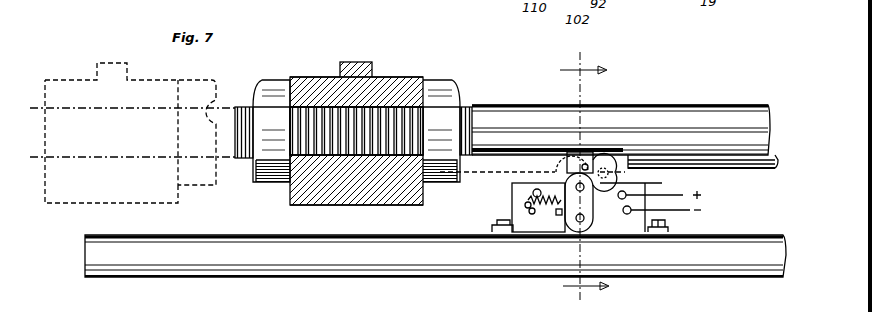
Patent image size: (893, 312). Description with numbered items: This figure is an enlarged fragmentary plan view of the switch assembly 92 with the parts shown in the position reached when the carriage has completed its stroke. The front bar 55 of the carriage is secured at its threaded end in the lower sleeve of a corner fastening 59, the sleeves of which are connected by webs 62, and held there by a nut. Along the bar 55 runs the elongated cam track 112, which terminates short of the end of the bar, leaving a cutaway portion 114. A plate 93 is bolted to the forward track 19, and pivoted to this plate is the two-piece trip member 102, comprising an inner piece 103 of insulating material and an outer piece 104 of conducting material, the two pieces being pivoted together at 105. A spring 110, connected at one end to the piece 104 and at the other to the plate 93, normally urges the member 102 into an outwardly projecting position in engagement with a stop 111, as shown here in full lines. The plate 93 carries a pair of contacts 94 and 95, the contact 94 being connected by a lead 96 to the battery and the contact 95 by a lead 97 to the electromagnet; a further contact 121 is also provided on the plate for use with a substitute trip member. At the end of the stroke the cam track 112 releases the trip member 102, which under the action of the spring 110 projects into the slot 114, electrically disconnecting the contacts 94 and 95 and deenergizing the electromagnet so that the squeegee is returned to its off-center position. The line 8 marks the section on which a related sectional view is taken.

The corner fastening 59 is at (143, 90).
The webs 62 is at (265, 80).
The front bar 55 is at (706, 115).
The cam track 112 is at (765, 158).
The cutaway portion 114 is at (630, 150).
The section line 8 is at (584, 170).
The forward track 19 is at (360, 268).
The pivot 105 is at (575, 185).
The outer piece 104 is at (576, 165).
The switch assembly 92 is at (592, 150).
The two-piece trip member 102 is at (568, 232).
The inner piece 103 is at (594, 228).
The plate 93 is at (512, 188).
The contact 121 is at (534, 196).
The spring 110 is at (537, 214).
The stop 111 is at (557, 214).
The contact 94 is at (660, 180).
The contact 95 is at (632, 214).
The lead 96 is at (685, 196).
The lead 97 is at (688, 212).